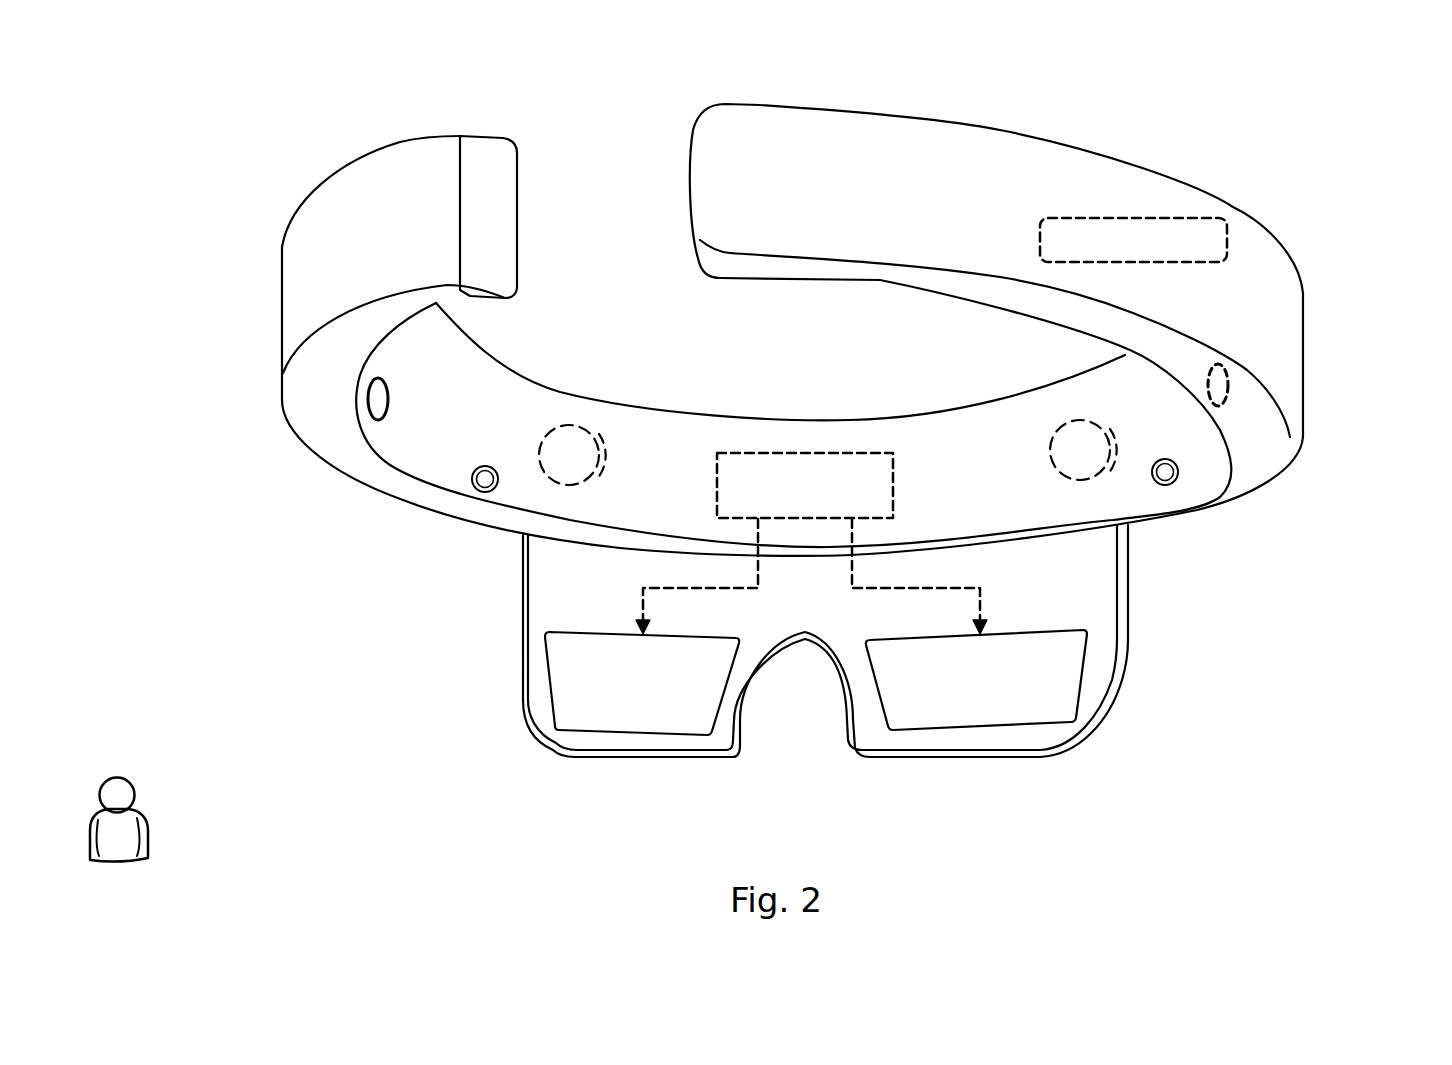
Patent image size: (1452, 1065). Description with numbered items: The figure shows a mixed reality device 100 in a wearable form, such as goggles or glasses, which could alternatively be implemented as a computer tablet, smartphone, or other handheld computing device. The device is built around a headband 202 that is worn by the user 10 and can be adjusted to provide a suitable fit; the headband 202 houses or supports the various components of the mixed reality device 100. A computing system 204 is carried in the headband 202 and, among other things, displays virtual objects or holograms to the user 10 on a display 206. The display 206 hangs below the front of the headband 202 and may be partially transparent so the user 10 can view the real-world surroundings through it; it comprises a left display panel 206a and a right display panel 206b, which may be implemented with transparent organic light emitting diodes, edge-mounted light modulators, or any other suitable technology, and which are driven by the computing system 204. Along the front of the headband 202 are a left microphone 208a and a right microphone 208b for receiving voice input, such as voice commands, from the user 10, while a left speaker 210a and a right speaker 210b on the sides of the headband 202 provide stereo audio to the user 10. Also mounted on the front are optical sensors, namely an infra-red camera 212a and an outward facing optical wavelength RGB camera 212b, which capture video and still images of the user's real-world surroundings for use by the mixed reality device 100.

The mixed reality device 100 is at (1297, 126).
The user 10 is at (116, 834).
The headband 202 is at (913, 196).
The computing system 204 is at (872, 509).
The display 206 is at (1125, 683).
The left display panel 206a is at (657, 701).
The right display panel 206b is at (997, 704).
The left microphone 208a is at (485, 479).
The right microphone 208b is at (1165, 472).
The left speaker 210a is at (378, 398).
The right speaker 210b is at (1222, 388).
The infra-red (IR) camera 212a is at (693, 460).
The RGB camera 212b is at (1046, 450).